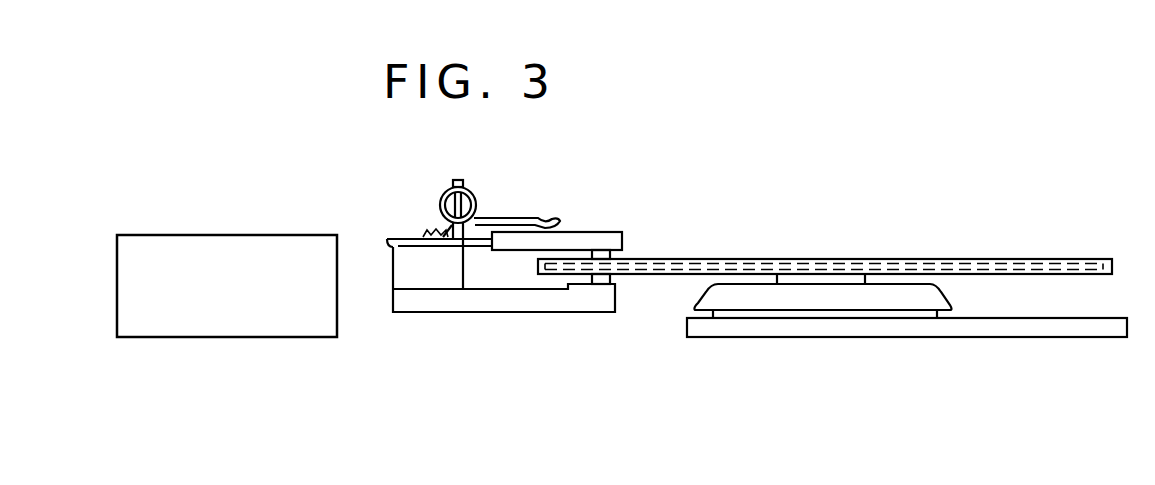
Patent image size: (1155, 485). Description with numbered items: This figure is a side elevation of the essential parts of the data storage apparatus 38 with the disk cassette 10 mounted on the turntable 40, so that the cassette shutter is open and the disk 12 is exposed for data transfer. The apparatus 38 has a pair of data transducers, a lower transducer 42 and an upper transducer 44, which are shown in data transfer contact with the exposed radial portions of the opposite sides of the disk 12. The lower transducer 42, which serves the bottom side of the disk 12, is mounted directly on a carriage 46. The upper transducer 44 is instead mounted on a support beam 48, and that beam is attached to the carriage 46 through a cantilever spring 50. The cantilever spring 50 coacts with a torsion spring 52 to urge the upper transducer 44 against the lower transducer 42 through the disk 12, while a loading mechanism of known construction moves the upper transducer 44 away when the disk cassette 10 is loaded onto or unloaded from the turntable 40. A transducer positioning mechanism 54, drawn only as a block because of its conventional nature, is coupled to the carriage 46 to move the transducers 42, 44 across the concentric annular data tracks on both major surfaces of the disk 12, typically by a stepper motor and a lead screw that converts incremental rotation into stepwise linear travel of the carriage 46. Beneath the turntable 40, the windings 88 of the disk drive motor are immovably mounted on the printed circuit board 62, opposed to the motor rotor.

The disk cassette 10 is at (1027, 257).
The disk 12 is at (927, 262).
The data storage apparatus 38 is at (335, 140).
The turntable 40 is at (787, 302).
The lower transducer 42 is at (612, 281).
The upper transducer 44 is at (612, 253).
The carriage 46 is at (563, 312).
The support beam 48 is at (592, 231).
The cantilever spring 50 is at (480, 243).
The torsion spring 52 is at (507, 219).
The transducer positioning mechanism 54 is at (237, 233).
The printed circuit board 62 is at (1060, 337).
The windings 88 is at (923, 315).